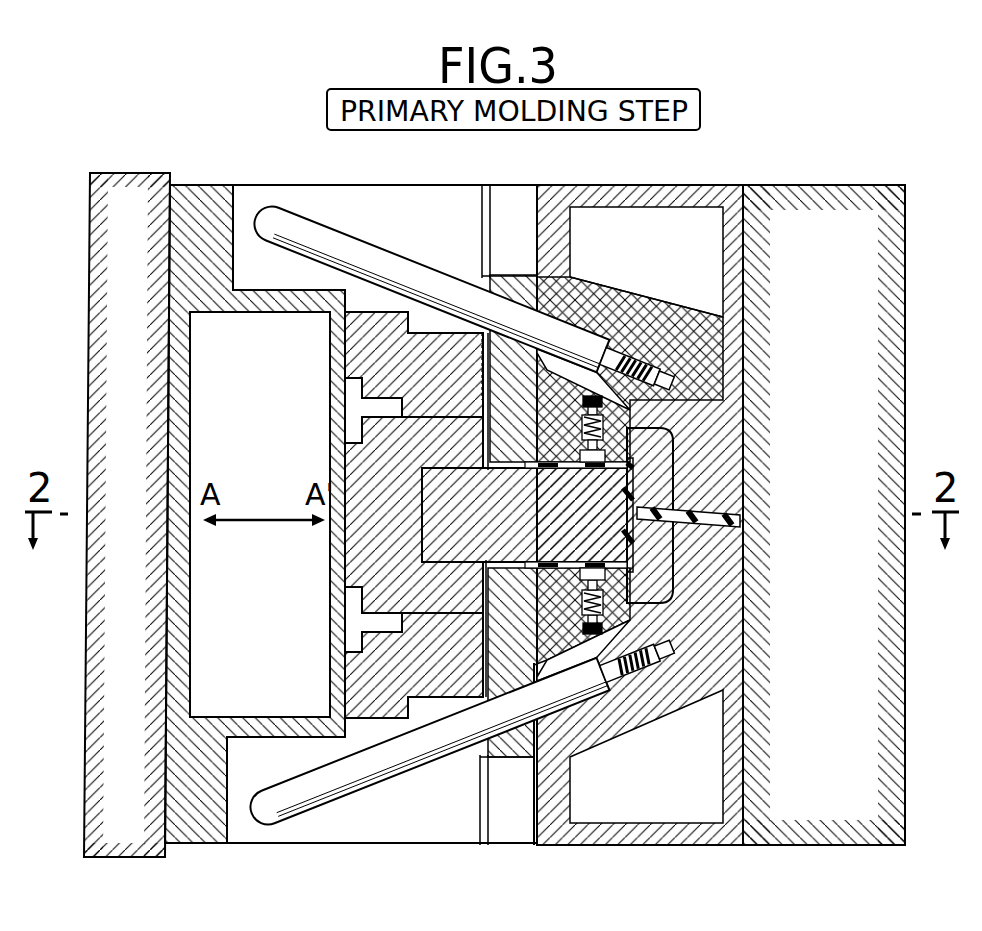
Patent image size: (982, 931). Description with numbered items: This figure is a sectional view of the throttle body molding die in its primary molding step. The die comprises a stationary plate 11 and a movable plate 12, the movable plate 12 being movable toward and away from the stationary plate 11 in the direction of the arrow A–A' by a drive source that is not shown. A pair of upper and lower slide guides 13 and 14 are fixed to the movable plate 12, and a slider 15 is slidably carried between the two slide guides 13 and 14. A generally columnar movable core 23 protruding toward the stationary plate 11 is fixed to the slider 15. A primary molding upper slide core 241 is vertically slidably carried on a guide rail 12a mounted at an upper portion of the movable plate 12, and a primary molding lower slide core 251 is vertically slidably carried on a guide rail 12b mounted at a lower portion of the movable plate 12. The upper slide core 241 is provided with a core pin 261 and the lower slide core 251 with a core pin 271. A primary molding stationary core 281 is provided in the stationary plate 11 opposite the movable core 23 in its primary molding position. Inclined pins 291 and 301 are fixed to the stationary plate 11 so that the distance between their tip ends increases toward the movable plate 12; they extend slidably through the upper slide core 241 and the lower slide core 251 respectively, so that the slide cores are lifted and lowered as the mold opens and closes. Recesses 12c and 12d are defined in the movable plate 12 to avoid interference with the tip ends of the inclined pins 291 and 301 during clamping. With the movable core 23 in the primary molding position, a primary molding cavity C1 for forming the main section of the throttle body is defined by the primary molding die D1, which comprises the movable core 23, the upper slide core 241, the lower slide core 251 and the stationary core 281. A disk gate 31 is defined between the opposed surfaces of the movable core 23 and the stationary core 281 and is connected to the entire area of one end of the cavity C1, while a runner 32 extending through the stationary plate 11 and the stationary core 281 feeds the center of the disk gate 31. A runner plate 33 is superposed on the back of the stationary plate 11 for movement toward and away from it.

The stationary plate 11 is at (646, 207).
The movable plate 12 is at (190, 210).
The guide rail 12a is at (484, 217).
The guide rail 12b is at (483, 815).
The recess 12c is at (320, 202).
The recess 12d is at (328, 825).
The upper slide guide 13 is at (360, 350).
The lower slide guide 14 is at (370, 668).
The slider 15 is at (345, 528).
The movable core 23 is at (530, 532).
The primary molding upper slide core 241 is at (535, 424).
The primary molding lower slide core 251 is at (530, 650).
The core pin 261 is at (583, 466).
The core pin 271 is at (583, 568).
The primary molding stationary core 281 is at (668, 458).
The inclined pin 291 is at (345, 246).
The inclined pin 301 is at (345, 778).
The disk gate 31 is at (620, 488).
The runner 32 is at (692, 525).
The runner plate 33 is at (803, 217).
The primary molding die D1 is at (658, 410).
The primary molding cavity C1 is at (512, 566).